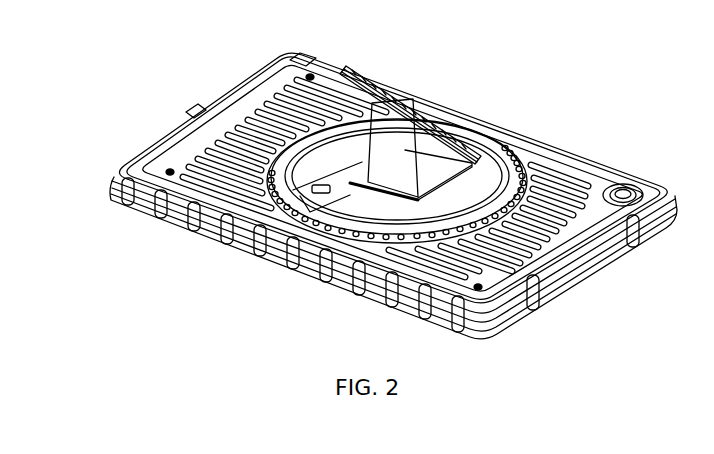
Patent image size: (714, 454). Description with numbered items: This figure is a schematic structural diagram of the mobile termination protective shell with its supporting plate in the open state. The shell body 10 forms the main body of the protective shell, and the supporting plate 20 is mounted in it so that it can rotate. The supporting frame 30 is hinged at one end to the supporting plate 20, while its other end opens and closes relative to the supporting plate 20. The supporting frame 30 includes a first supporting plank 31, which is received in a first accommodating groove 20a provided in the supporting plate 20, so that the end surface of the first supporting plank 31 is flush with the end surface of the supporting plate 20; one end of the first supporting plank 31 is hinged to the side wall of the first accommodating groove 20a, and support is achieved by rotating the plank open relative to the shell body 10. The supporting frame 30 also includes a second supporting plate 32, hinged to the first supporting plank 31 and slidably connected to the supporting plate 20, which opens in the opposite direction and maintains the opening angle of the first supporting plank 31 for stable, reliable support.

The shell body 10 is at (140, 160).
The supporting plate 20 is at (233, 210).
The first accommodating groove 20a is at (303, 243).
The supporting frame 30 is at (578, 56).
The first supporting plank 31 is at (443, 133).
The second supporting plate 32 is at (483, 150).